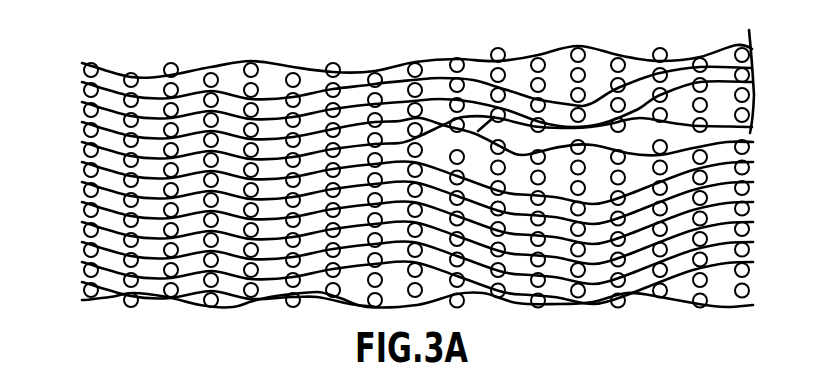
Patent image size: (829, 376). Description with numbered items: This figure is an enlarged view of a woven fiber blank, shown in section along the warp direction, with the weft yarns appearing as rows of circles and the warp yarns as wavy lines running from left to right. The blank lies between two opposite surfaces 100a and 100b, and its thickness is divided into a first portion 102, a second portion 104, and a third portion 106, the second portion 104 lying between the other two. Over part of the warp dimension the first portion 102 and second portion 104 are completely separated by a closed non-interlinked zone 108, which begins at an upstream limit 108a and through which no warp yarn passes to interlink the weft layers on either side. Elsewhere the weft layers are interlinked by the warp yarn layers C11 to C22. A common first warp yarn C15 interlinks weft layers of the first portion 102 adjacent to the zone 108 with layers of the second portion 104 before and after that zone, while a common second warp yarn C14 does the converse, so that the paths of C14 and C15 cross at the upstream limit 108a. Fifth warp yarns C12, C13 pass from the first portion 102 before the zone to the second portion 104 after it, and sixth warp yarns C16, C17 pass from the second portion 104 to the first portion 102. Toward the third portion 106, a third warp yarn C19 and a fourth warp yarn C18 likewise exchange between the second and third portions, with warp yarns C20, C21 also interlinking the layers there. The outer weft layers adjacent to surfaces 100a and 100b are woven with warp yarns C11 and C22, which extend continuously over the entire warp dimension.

The surface 100a is at (615, 48).
The surface 100b is at (645, 302).
The first portion 102 is at (78, 62).
The second portion 104 is at (78, 138).
The third portion 106 is at (78, 222).
The closed non-interlinked zone 108 is at (746, 69).
The upstream limit 108a is at (512, 92).
The warp yarn C11 is at (108, 63).
The fifth warp yarn C12 is at (148, 82).
The fifth warp yarn C13 is at (190, 122).
The second warp yarn C14 is at (472, 140).
The first warp yarn C15 is at (558, 127).
The sixth warp yarn C16 is at (309, 185).
The sixth warp yarn C17 is at (351, 195).
The fourth warp yarn C18 is at (152, 222).
The third warp yarn C19 is at (190, 248).
The warp yarn C20 is at (230, 280).
The warp yarn C21 is at (315, 288).
The warp yarn C22 is at (108, 296).